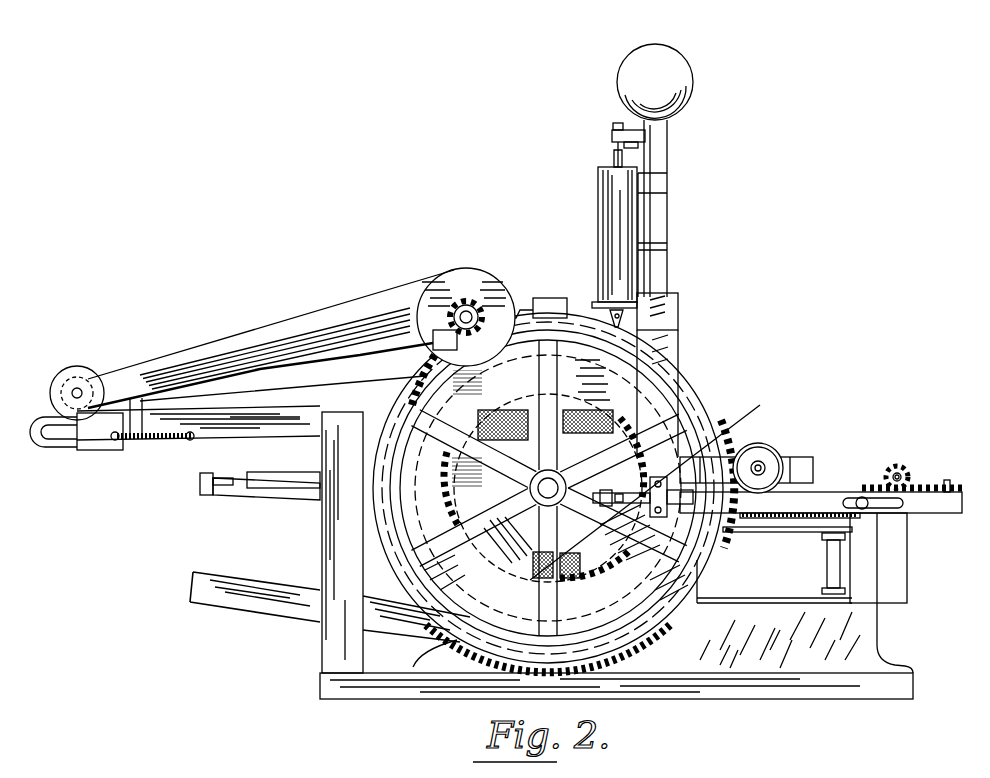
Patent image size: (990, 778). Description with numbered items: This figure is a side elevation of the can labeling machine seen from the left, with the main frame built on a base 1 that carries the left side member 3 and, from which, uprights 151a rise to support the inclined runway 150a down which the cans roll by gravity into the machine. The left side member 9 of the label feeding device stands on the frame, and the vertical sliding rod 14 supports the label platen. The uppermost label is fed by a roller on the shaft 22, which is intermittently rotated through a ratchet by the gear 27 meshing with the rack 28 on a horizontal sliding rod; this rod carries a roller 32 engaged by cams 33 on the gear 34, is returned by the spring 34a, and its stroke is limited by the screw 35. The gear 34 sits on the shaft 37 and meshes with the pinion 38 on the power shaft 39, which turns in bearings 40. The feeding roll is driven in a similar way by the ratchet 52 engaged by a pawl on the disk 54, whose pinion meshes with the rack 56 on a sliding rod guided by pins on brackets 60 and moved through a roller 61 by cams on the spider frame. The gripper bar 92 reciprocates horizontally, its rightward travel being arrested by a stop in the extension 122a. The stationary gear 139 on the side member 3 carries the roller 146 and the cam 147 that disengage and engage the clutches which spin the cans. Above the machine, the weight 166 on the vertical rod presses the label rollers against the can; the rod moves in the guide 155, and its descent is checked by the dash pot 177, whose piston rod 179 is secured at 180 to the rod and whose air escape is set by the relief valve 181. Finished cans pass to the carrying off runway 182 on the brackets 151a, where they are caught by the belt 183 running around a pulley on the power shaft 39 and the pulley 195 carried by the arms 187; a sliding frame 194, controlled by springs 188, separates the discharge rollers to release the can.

The base 1 is at (330, 686).
The left side member 3 is at (672, 352).
The left side member of label feeding device 9 is at (890, 605).
The vertical sliding rod 14 is at (828, 548).
The shaft 22 is at (902, 470).
The gear 27 is at (884, 472).
The rack 28 is at (940, 513).
The roller 32 is at (690, 512).
The cams 33 is at (420, 395).
The gear 34 is at (690, 410).
The spring 34a is at (788, 532).
The screw 35 is at (558, 478).
The shaft 37 is at (500, 475).
The pinion 38 is at (465, 300).
The power shaft 39 is at (478, 306).
The bearings 40 is at (433, 336).
The ratchet 52 is at (765, 446).
The disk 54 is at (790, 458).
The rack 56 is at (810, 458).
The brackets 60 is at (870, 580).
The roller 61 is at (655, 548).
The sliding bar 92 is at (293, 488).
The extension 122a is at (235, 500).
The stationary gear 139 is at (548, 600).
The roller 146 is at (500, 405).
The cam 147 is at (661, 486).
The inclined runway 150a is at (200, 580).
The uprights 151a is at (342, 540).
The guide 155 is at (655, 225).
The weight 166 is at (630, 70).
The dash pot 177 is at (600, 178).
The piston rod 179 is at (638, 148).
The securing point 180 is at (612, 133).
The relief valve 181 is at (625, 318).
The carrying off runway 182 is at (225, 440).
The belt 183 is at (345, 302).
The arms 187 is at (262, 350).
The springs 188 is at (145, 442).
The sliding frame 194 is at (100, 448).
The pulley 195 is at (77, 366).